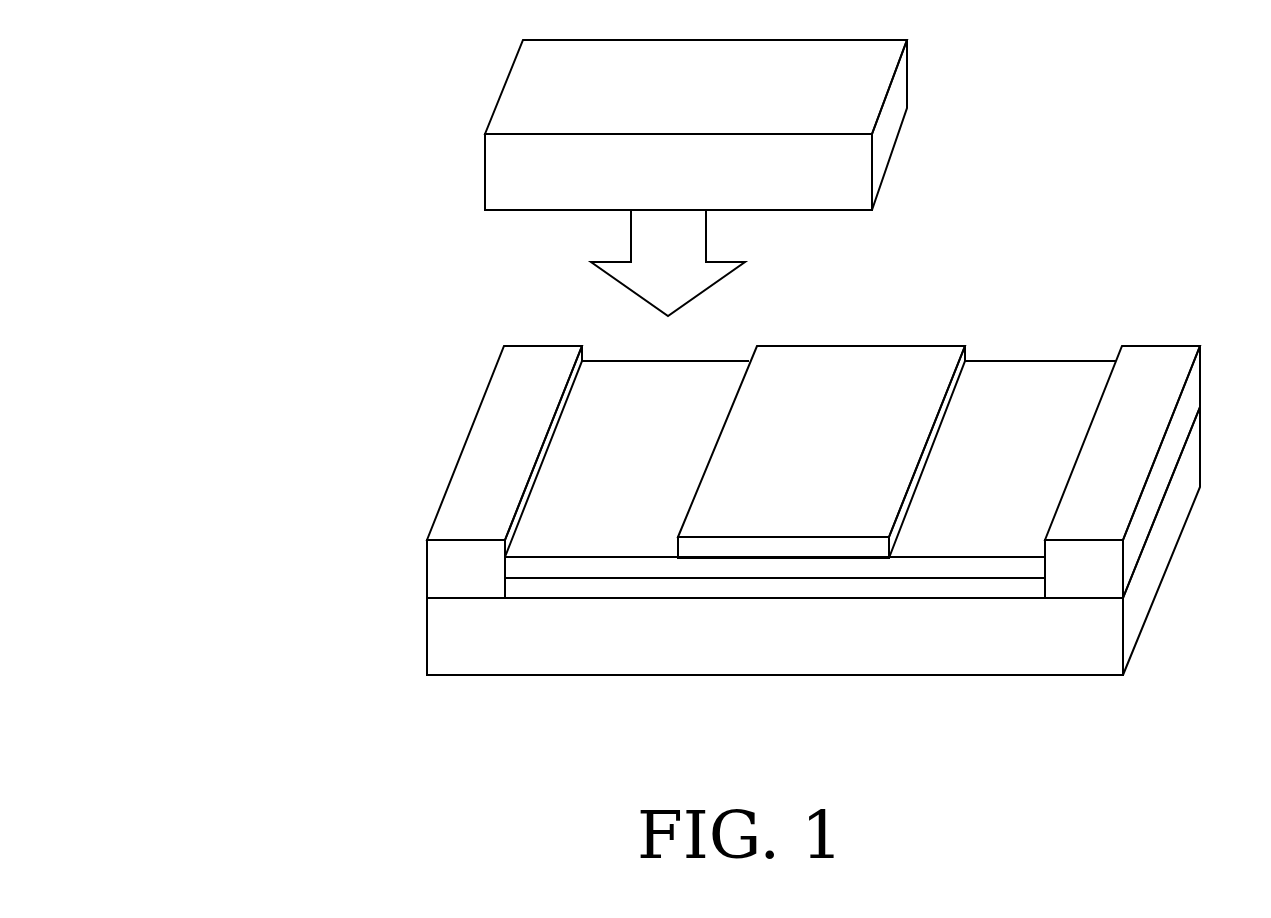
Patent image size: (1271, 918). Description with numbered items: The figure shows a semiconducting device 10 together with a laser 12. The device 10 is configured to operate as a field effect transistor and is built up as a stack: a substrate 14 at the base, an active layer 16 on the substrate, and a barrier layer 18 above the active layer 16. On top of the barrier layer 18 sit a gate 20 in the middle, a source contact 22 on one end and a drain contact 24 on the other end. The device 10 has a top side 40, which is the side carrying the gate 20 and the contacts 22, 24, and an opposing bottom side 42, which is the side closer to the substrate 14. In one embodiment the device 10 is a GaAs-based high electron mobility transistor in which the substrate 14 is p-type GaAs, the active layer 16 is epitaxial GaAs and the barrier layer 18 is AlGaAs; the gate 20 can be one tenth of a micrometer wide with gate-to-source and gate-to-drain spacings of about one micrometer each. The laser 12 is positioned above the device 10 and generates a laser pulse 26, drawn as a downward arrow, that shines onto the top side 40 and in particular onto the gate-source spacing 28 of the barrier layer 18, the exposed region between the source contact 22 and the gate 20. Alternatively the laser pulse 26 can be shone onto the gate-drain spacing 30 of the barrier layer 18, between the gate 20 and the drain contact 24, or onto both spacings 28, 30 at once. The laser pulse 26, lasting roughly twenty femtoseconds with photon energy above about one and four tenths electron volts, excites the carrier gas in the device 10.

The semiconducting device 10 is at (312, 740).
The laser 12 is at (696, 125).
The substrate 14 is at (813, 541).
The active layer 16 is at (556, 592).
The barrier layer 18 is at (959, 568).
The gate 20 is at (821, 452).
The source contact 22 is at (504, 472).
The drain contact 24 is at (1122, 472).
The laser pulse 26 is at (668, 263).
The gate-source spacing 28 is at (627, 459).
The gate-drain spacing 30 is at (1002, 459).
The top side 40 is at (1014, 241).
The bottom side 42 is at (1188, 737).